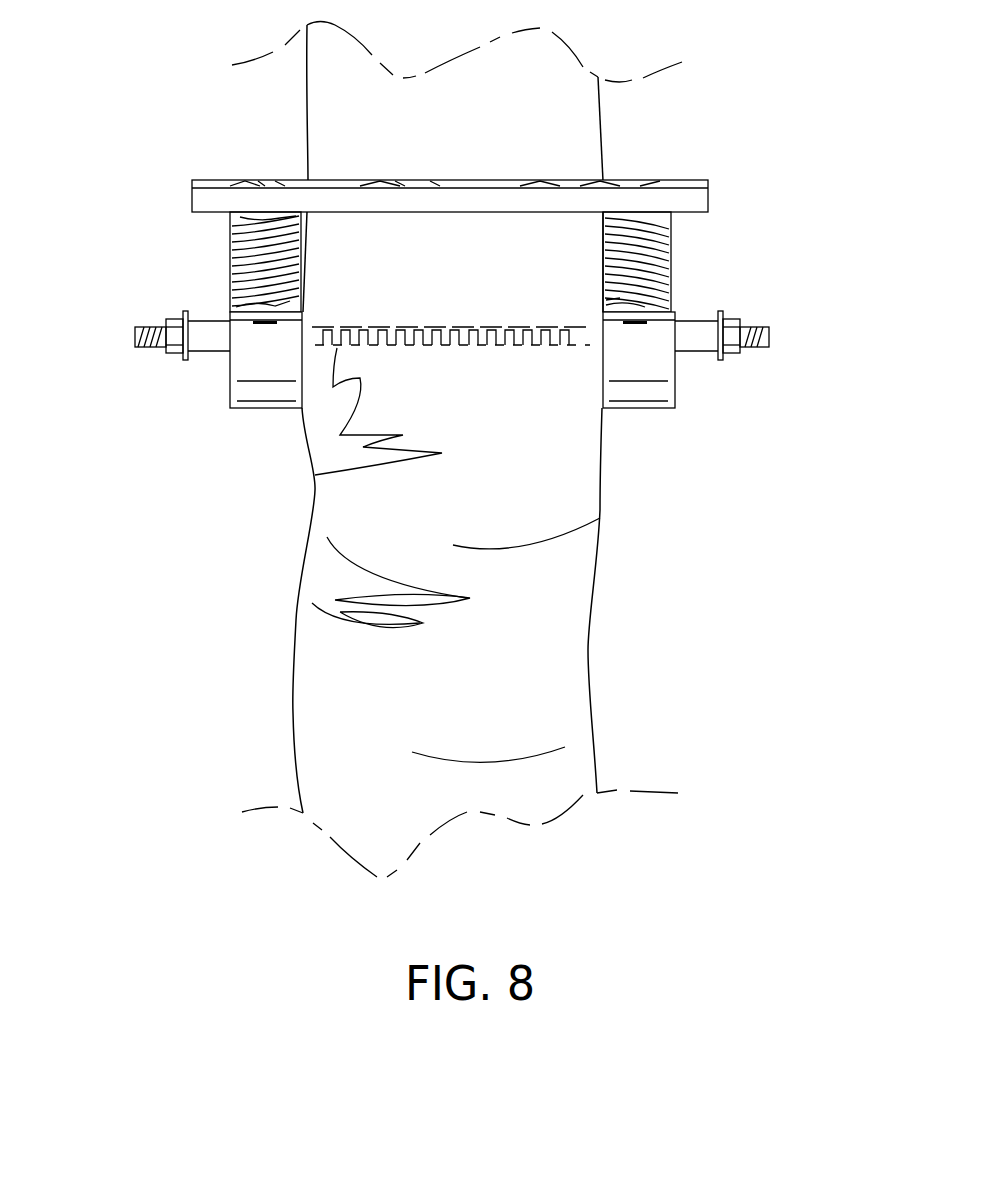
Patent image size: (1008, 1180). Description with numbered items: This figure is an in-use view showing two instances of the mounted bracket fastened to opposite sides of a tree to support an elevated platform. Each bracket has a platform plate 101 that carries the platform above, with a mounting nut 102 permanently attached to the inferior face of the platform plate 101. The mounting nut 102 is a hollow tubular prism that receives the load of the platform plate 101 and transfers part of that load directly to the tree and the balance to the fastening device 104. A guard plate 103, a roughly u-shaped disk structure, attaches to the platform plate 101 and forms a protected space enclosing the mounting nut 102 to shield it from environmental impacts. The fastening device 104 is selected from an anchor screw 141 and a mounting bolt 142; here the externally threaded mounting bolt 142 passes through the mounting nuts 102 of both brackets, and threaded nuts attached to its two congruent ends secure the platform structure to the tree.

The platform plate 101 is at (230, 318).
The mounting nut 102 is at (198, 345).
The guard plate 103 is at (250, 397).
The fastening device 104 is at (594, 487).
The anchor screw 141 is at (554, 450).
The mounting bolt 142 is at (462, 347).